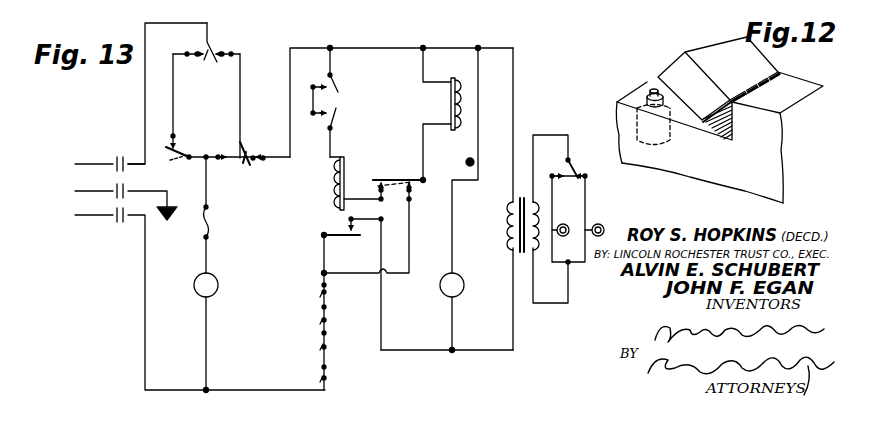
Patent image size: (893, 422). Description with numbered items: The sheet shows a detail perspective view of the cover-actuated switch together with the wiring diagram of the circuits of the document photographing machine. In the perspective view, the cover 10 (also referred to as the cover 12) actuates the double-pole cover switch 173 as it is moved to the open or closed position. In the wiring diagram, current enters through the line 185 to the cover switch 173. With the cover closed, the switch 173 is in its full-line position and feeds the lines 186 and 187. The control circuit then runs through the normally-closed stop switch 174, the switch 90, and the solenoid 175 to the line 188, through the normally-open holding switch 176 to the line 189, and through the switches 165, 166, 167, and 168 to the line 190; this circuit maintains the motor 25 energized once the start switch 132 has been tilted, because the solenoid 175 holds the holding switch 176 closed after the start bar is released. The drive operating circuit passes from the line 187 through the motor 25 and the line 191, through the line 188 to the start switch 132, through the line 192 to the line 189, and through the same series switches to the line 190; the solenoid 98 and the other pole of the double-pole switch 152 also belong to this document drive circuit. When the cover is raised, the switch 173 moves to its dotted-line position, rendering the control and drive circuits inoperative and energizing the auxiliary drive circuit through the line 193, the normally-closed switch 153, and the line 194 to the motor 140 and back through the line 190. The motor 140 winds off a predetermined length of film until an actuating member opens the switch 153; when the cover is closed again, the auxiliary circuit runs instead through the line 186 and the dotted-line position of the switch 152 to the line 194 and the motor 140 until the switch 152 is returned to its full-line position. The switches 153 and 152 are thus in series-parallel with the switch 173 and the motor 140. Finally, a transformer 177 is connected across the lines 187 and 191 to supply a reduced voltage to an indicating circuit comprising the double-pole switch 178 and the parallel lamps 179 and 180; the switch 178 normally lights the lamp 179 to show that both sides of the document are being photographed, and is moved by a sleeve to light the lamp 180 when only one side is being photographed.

In FIG. 12, the cover 10 is at (764, 125).
In FIG. 12, the cover 12 is at (712, 57).
In FIG. 13, the motor 25 is at (466, 283).
In FIG. 13, the switch 90 is at (330, 124).
In FIG. 13, the solenoid 98 is at (451, 100).
In FIG. 13, the start switch 132 is at (392, 178).
In FIG. 13, the motor 140 is at (218, 283).
In FIG. 13, the double-pole switch 152 is at (234, 164).
In FIG. 13, the normally-closed switch 153 is at (170, 162).
In FIG. 13, the switch 165 is at (327, 292).
In FIG. 13, the switch 166 is at (327, 318).
In FIG. 13, the switch 167 is at (327, 344).
In FIG. 13, the switch 168 is at (327, 376).
In FIG. 13, the cover switch 173 is at (206, 53).
In FIG. 12, the cover switch 173 is at (647, 90).
In FIG. 13, the stop switch 174 is at (329, 77).
In FIG. 13, the solenoid 175 is at (338, 196).
In FIG. 13, the holding switch 176 is at (326, 232).
In FIG. 13, the transformer 177 is at (508, 228).
In FIG. 13, the double-pole switch 178 is at (573, 162).
In FIG. 13, the lamp 179 is at (604, 227).
In FIG. 13, the lamp 180 is at (569, 226).
In FIG. 13, the line 185 is at (145, 95).
In FIG. 13, the line 186 is at (241, 89).
In FIG. 13, the line 187 is at (383, 38).
In FIG. 13, the line 188 is at (381, 252).
In FIG. 13, the line 189 is at (324, 256).
In FIG. 13, the line 190 is at (145, 314).
In FIG. 13, the line 191 is at (488, 351).
In FIG. 13, the line 192 is at (410, 235).
In FIG. 13, the line 193 is at (173, 108).
In FIG. 13, the line 194 is at (211, 208).